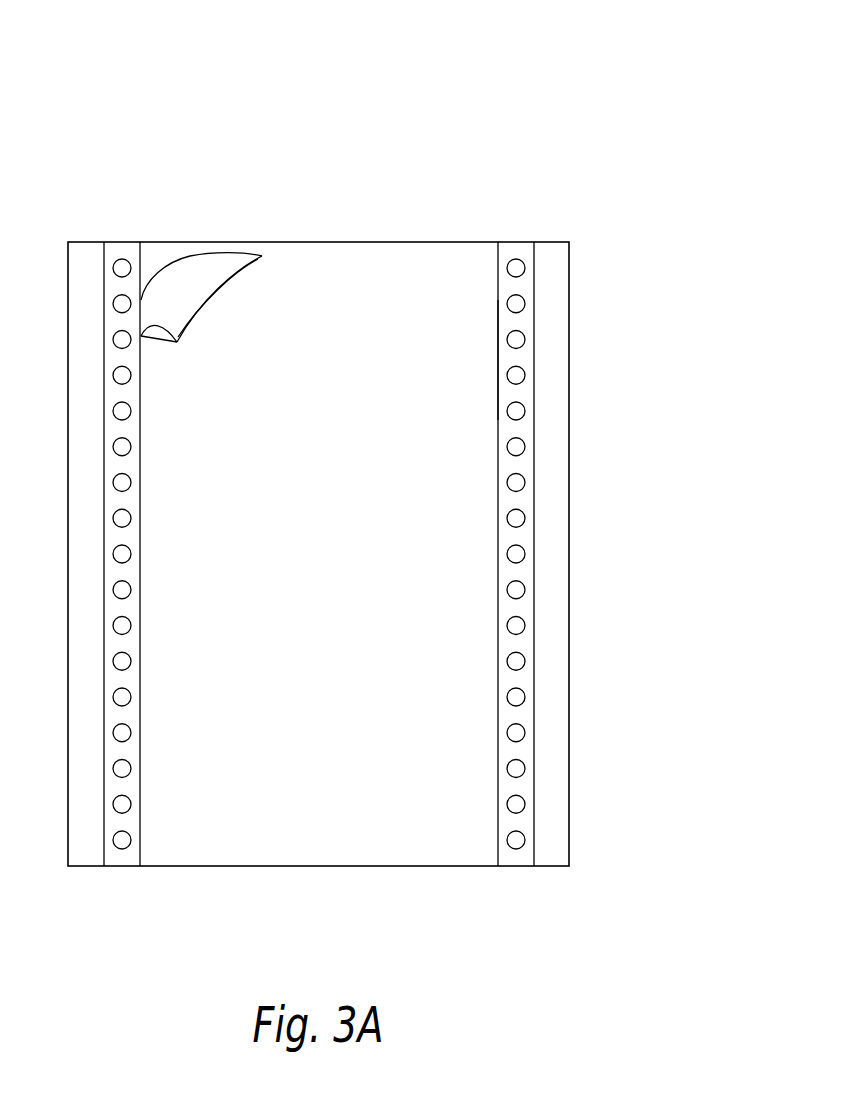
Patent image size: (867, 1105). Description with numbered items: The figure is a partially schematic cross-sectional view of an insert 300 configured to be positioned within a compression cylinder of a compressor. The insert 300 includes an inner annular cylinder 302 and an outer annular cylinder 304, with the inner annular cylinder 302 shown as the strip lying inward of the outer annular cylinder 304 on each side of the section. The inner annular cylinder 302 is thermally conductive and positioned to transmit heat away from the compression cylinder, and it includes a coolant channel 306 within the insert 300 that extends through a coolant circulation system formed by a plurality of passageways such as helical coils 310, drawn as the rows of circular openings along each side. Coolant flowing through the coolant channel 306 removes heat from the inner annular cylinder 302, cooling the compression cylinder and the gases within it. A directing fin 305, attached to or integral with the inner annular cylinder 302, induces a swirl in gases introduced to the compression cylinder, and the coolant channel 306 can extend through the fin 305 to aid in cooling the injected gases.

The insert 300 is at (465, 90).
The inner annular cylinder 302 is at (121, 858).
The outer annular cylinder 304 is at (83, 858).
The directing fin 305 is at (197, 263).
The coolant channel 306 is at (505, 358).
The helical coils 310 is at (512, 269).